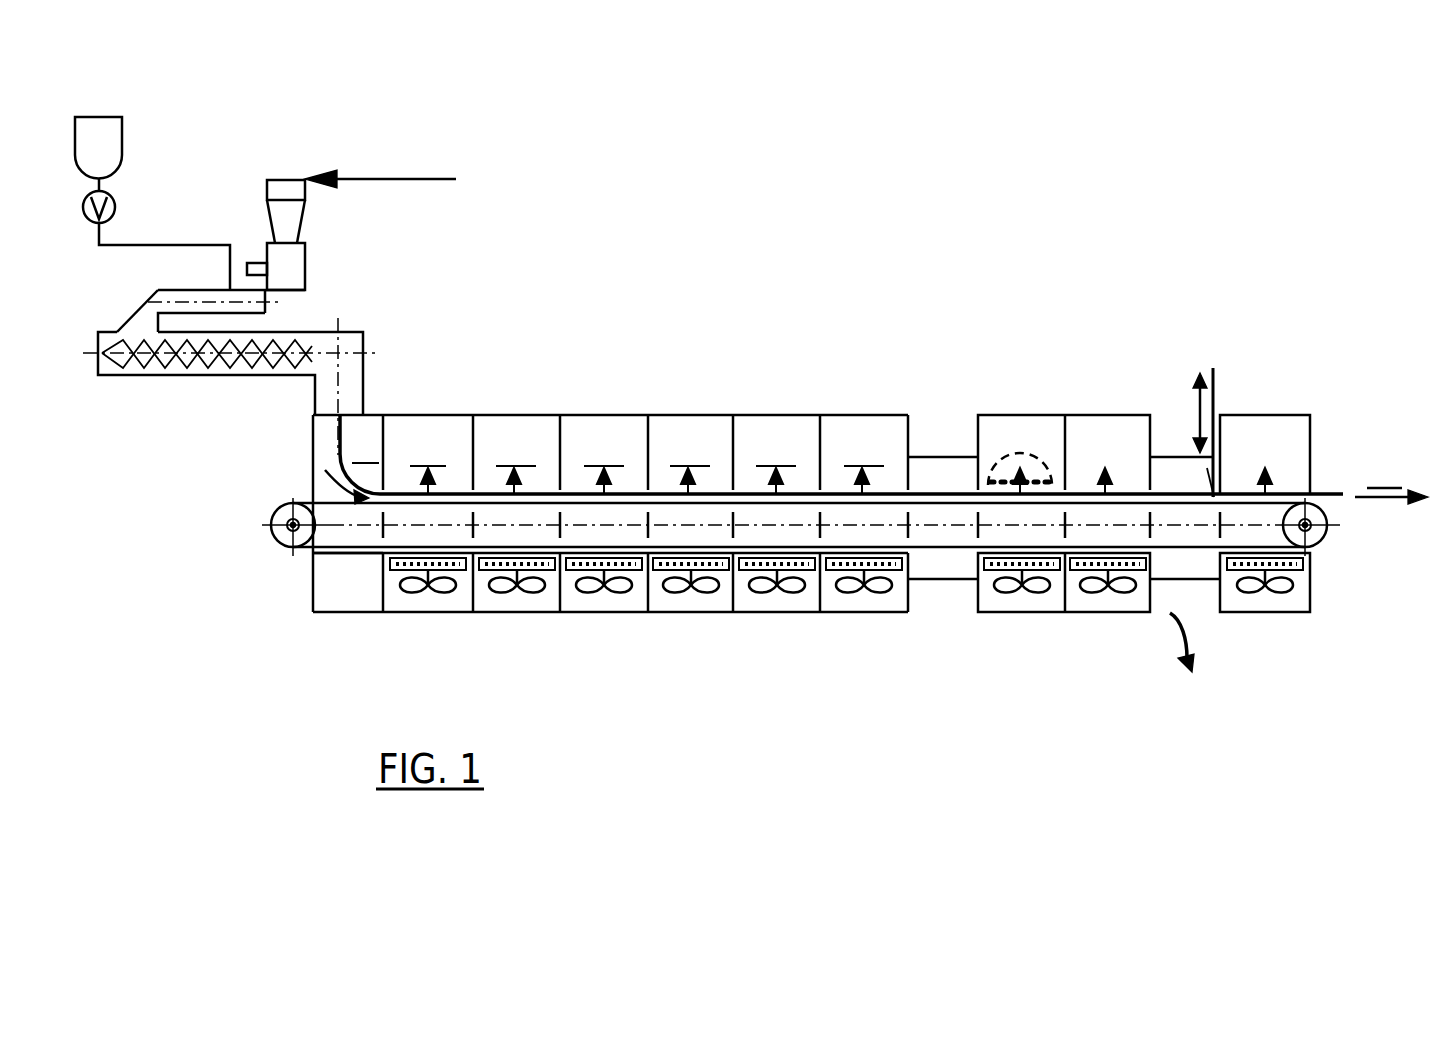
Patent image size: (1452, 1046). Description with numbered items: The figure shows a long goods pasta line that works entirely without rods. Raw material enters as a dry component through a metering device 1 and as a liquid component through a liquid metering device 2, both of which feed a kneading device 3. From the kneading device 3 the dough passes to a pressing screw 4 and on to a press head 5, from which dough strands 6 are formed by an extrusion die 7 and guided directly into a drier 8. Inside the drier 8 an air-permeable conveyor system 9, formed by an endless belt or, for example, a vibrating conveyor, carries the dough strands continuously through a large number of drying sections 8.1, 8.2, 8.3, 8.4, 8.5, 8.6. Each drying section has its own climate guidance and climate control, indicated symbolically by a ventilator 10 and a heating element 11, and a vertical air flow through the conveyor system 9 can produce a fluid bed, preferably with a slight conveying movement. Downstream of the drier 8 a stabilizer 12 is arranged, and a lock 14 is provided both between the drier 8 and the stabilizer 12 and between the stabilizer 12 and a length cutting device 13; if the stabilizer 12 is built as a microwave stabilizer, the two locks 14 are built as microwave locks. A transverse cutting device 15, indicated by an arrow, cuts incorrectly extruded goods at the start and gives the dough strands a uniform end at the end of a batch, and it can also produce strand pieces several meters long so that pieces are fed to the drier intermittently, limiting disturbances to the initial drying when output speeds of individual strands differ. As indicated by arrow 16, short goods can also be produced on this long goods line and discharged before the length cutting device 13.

The metering device 1 is at (305, 262).
The liquid metering device 2 is at (117, 198).
The kneading device 3 is at (170, 287).
The pressing screw 4 is at (200, 372).
The press head 5 is at (315, 396).
The dough strands 6 is at (313, 462).
The extrusion die 7 is at (315, 436).
The drier 8 is at (610, 397).
The drying section 8.1 is at (428, 460).
The drying section 8.2 is at (516, 460).
The drying section 8.3 is at (604, 460).
The drying section 8.4 is at (690, 460).
The drying section 8.5 is at (776, 460).
The drying section 8.6 is at (864, 460).
The air-permeable conveyor system 9 is at (282, 549).
The ventilator 10 is at (413, 600).
The heating element 11 is at (376, 559).
The stabilizer 12 is at (1063, 384).
The length cutting device 13 is at (1268, 389).
The lock 14 is at (932, 478).
The transverse cutting device 15 is at (362, 422).
The arrow 16 is at (1172, 650).